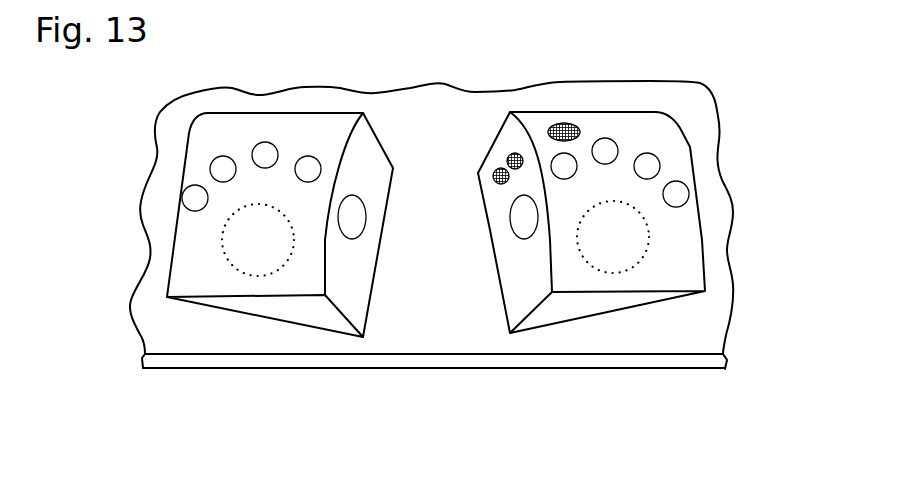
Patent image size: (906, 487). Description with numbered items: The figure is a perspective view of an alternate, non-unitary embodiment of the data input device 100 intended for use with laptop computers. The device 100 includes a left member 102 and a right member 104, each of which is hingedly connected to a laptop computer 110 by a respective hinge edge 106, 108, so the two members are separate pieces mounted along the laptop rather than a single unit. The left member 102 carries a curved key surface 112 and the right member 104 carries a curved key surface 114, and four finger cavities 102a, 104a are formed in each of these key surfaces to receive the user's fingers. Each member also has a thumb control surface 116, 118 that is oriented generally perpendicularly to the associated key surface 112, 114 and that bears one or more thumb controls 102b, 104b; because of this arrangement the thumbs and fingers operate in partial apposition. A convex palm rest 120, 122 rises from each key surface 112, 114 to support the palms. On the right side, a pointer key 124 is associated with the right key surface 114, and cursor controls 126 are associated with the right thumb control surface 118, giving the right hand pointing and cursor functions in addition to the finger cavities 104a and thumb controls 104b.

The data input device 100 is at (148, 113).
The left member 102 is at (310, 112).
The finger cavities 102a is at (268, 143).
The thumb controls 102b is at (360, 198).
The right member 104 is at (600, 110).
The finger cavities 104a is at (657, 155).
The thumb controls 104b is at (510, 212).
The hinge edge 106 is at (183, 165).
The hinge edge 108 is at (695, 166).
The laptop computer 110 is at (452, 330).
The curved key surface 112 is at (232, 130).
The curved key surface 114 is at (693, 255).
The thumb control surface 116 is at (348, 300).
The thumb control surface 118 is at (528, 297).
The convex palm rest 120 is at (268, 267).
The convex palm rest 122 is at (612, 268).
The pointer key 124 is at (565, 123).
The cursor controls 126 is at (512, 153).